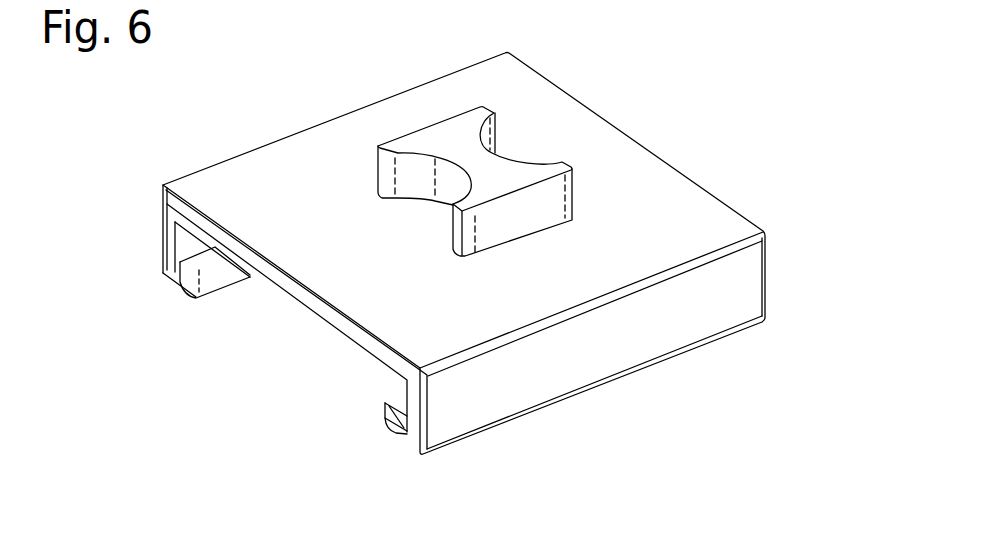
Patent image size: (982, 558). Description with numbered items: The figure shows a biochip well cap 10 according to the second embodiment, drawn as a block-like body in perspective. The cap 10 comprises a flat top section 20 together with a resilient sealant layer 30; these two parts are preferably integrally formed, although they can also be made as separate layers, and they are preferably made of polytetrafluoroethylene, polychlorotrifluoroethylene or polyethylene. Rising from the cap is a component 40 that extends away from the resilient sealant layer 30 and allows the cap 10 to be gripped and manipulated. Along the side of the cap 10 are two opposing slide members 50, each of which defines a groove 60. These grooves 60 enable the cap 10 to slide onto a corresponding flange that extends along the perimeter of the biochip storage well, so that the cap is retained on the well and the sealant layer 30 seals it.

The biochip well cap 10 is at (427, 263).
The flat top section 20 is at (624, 158).
The resilient sealant layer 30 is at (335, 338).
The component 40 is at (425, 133).
The slide members 50 is at (168, 240).
The groove 60 is at (212, 263).